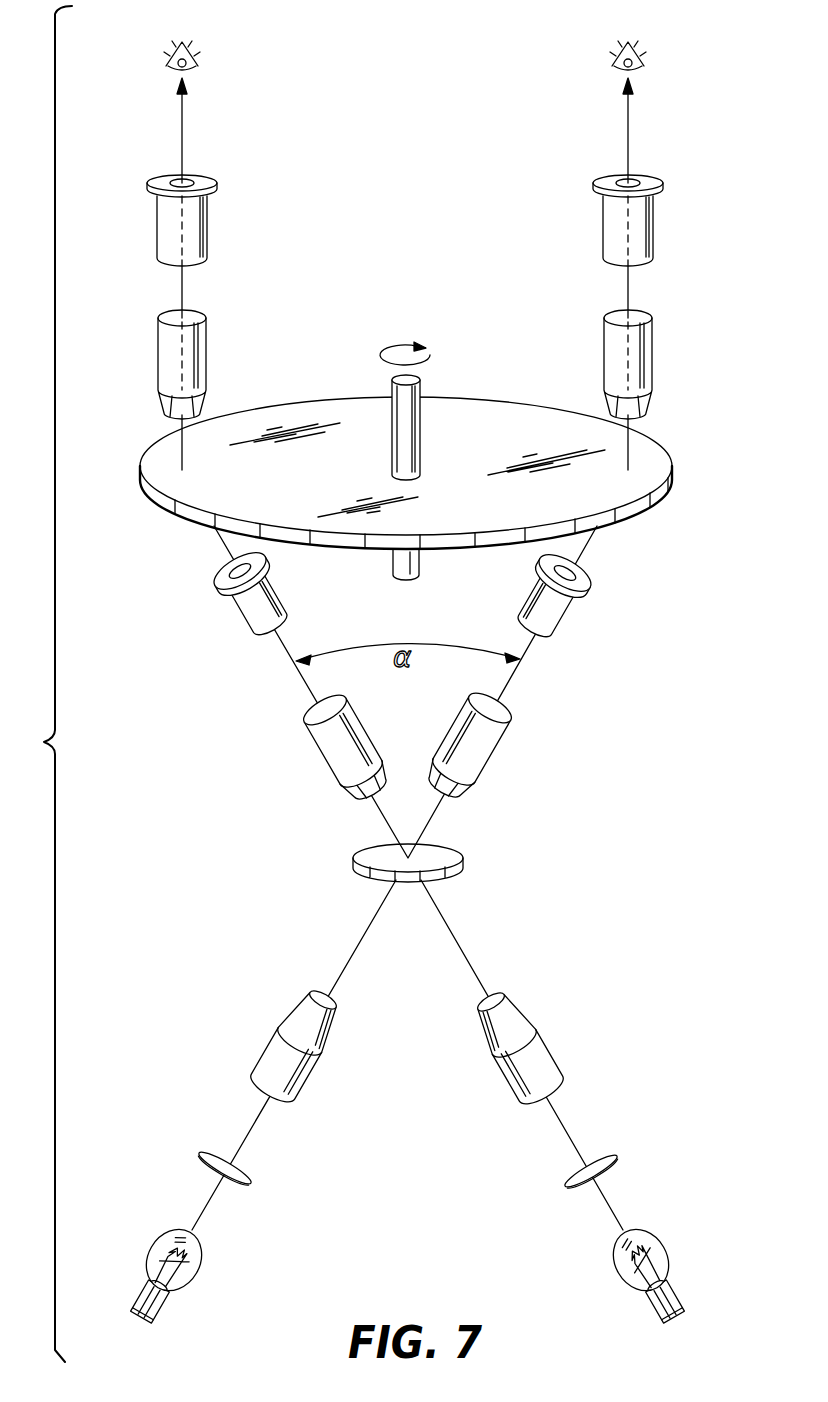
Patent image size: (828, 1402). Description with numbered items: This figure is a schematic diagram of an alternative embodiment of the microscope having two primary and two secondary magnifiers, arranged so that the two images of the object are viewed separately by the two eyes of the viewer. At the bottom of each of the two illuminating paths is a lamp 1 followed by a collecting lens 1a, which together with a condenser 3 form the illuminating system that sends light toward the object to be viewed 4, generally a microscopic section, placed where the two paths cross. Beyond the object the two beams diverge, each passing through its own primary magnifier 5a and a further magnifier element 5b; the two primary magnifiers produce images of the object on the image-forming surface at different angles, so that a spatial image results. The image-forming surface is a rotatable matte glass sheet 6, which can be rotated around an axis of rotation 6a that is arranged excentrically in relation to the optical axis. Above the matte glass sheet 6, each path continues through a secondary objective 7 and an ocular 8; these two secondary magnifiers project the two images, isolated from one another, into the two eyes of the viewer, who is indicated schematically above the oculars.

The lamp 1 is at (170, 1296).
The collecting lens 1a is at (252, 1171).
The condenser 3 is at (300, 1075).
The object to be viewed 4 is at (450, 860).
The primary magnifier 5a is at (310, 752).
The primary magnifier element 5b is at (584, 618).
The rotatable matte glass sheet 6 is at (655, 476).
The axis of rotation 6a is at (418, 377).
The secondary objective 7 is at (196, 362).
The ocular 8 is at (207, 222).